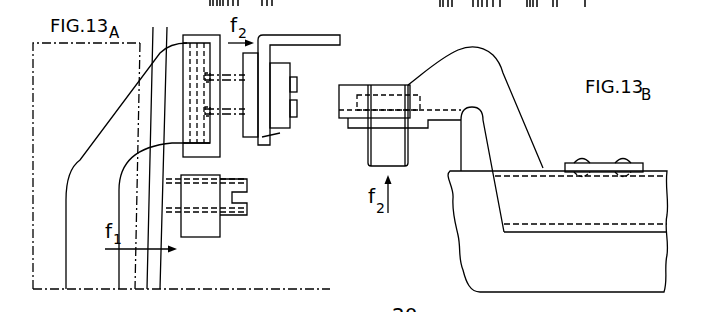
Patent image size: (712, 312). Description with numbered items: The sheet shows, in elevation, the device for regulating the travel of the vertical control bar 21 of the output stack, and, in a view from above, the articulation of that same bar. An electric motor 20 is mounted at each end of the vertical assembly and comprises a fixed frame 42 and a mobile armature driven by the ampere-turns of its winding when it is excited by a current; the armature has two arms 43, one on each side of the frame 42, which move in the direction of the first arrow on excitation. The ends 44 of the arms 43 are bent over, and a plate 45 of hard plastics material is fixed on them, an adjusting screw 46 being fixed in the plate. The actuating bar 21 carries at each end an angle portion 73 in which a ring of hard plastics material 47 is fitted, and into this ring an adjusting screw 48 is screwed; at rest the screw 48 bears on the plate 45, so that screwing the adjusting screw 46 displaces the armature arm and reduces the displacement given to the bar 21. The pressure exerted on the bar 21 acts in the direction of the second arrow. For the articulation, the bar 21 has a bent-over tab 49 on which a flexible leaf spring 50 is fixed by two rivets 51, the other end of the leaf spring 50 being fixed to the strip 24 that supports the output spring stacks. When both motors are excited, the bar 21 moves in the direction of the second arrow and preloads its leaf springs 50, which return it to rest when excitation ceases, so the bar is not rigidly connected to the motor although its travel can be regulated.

In FIG. 13A, the electric motor 20 is at (53, 60).
In FIG. 13A, the vertical control bar 21 is at (333, 40).
In FIG. 13B, the vertical control bar 21 is at (500, 92).
In FIG. 13B, the strip 24 is at (465, 188).
In FIG. 13A, the fixed frame 42 is at (160, 278).
In FIG. 13A, the arm 43 is at (82, 203).
In FIG. 13A, the end 44 is at (210, 137).
In FIG. 13A, the plate 45 is at (210, 232).
In FIG. 13A, the adjusting screw 46 is at (238, 212).
In FIG. 13A, the ring of hard plastics material 47 is at (282, 75).
In FIG. 13B, the ring of hard plastics material 47 is at (357, 124).
In FIG. 13A, the adjusting screw 48 is at (297, 108).
In FIG. 13B, the adjusting screw 48 is at (400, 152).
In FIG. 13B, the bent-over tab 49 is at (637, 167).
In FIG. 13B, the flexible leaf spring 50 is at (602, 172).
In FIG. 13B, the rivet 51 is at (578, 158).
In FIG. 13B, the angle portion 73 is at (340, 117).